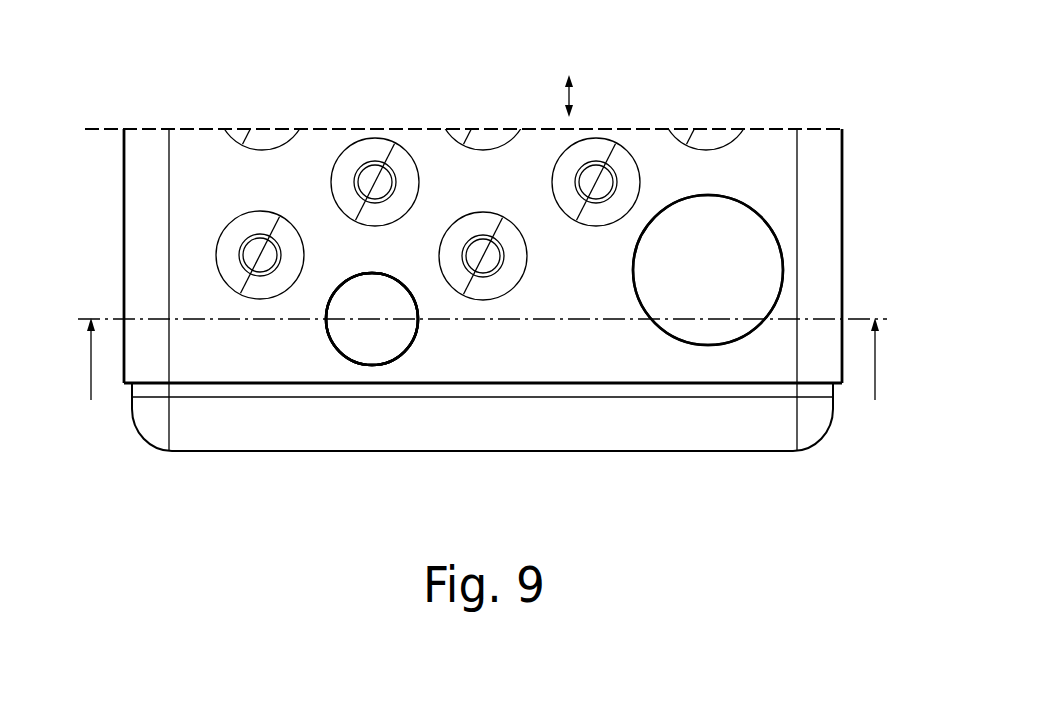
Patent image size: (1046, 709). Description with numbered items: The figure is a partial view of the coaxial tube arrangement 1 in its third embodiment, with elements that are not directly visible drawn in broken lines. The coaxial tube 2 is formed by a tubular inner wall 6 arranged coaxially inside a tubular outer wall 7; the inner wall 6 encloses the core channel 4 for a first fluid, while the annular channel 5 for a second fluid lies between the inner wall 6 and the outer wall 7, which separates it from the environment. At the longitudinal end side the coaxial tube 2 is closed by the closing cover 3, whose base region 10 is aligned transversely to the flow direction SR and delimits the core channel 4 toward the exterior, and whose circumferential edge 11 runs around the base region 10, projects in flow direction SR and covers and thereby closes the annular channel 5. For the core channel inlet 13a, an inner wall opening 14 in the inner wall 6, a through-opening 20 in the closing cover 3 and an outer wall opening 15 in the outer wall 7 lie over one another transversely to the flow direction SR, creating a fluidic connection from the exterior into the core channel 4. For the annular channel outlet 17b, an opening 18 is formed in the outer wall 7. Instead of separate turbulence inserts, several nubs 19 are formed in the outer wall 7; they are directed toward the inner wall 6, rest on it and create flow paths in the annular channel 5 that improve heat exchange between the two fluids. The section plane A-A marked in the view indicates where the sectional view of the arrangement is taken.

The coaxial tube arrangement 1 is at (823, 80).
The coaxial tube 2 is at (852, 171).
The closing cover 3 is at (745, 460).
The core channel 4 is at (190, 155).
The annular channel 5 is at (190, 212).
The inner wall 6 is at (780, 152).
The outer wall 7 is at (783, 205).
The base region 10 is at (235, 460).
The circumferential edge 11 is at (325, 407).
The core channel inlet 13a is at (400, 335).
The inner wall opening 14 is at (380, 345).
The outer wall opening 15 is at (380, 345).
The through-opening 20 is at (380, 345).
The annular channel outlet 17b is at (757, 278).
The opening 18 is at (767, 253).
The nub 19 is at (268, 220).
The flow direction SR is at (573, 90).
The section plane A- A is at (483, 359).